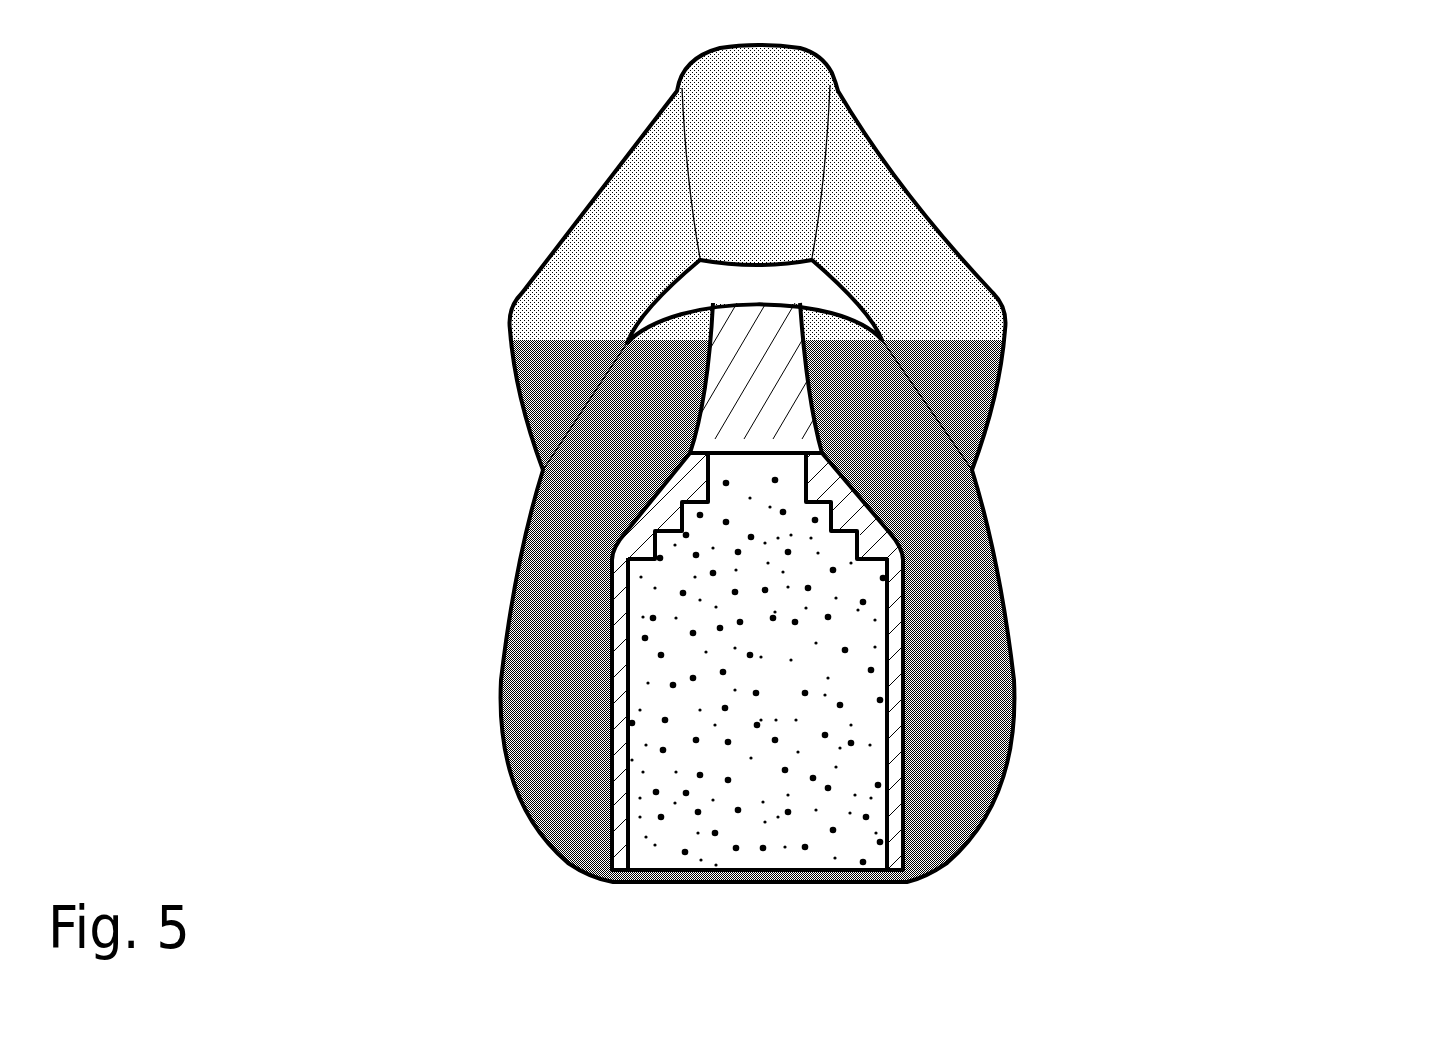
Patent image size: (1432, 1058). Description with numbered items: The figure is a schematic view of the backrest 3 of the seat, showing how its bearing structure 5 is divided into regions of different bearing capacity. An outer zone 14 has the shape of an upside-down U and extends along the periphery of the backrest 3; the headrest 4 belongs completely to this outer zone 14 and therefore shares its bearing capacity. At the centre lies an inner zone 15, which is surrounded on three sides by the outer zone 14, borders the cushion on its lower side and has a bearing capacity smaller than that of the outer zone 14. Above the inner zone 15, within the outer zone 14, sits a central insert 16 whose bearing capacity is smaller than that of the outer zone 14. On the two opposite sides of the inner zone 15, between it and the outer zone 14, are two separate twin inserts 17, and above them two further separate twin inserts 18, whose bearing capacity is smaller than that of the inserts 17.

The backrest 3 is at (350, 665).
The headrest 4 is at (528, 128).
The bearing structure 5 is at (1303, 875).
The outer zone 14 is at (888, 265).
The inner zone 15 is at (774, 791).
The insert 16 is at (758, 391).
The twin inserts 17 is at (617, 778).
The twin inserts 18 is at (677, 513).